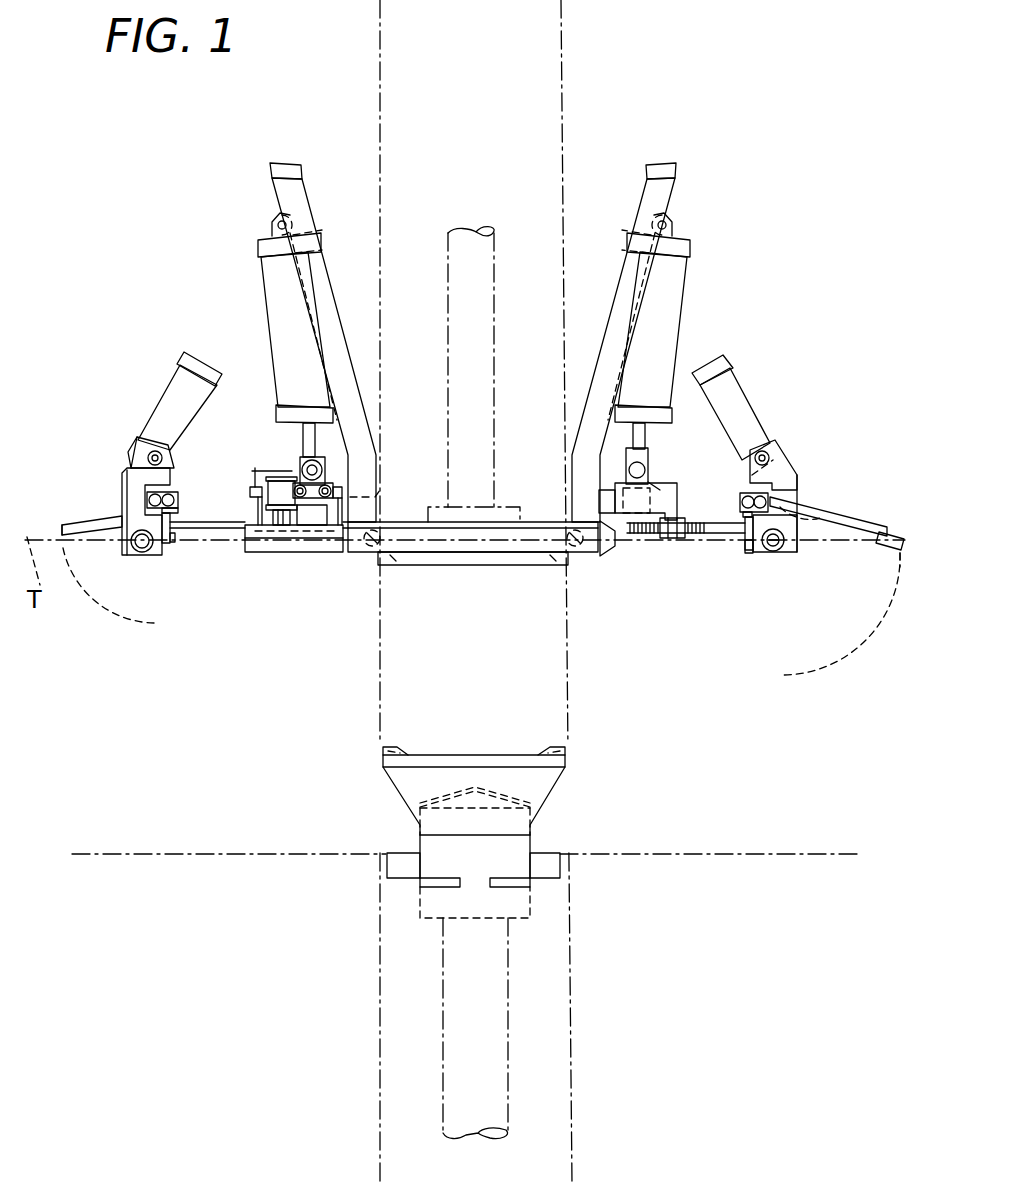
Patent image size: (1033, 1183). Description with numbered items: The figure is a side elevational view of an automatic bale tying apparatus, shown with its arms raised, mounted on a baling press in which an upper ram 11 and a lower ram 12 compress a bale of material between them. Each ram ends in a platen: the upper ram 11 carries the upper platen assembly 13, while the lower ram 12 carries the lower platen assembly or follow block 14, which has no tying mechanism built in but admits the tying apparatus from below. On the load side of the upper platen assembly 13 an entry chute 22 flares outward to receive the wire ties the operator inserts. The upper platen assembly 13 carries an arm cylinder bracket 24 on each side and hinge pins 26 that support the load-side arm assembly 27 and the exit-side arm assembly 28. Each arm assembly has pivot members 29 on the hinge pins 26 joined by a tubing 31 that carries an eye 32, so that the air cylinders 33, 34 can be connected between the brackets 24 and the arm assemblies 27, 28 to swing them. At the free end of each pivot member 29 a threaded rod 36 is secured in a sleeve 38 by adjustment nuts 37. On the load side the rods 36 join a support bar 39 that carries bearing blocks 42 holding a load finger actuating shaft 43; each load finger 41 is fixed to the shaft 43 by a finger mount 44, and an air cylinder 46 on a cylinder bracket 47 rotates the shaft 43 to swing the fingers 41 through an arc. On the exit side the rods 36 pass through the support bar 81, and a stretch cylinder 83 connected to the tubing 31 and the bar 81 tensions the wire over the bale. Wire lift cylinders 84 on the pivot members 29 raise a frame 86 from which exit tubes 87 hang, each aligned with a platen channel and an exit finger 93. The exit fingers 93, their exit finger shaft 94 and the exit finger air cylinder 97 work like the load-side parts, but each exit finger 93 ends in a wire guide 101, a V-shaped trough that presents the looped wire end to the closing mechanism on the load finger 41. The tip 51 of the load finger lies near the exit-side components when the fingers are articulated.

The upper ram 11 is at (497, 253).
The lower ram 12 is at (503, 1054).
The upper platen assembly 13 is at (453, 558).
The lower platen assembly or follow block 14 is at (472, 756).
The entry chute 22 is at (615, 555).
The arm cylinder bracket 24 is at (293, 193).
The hinge pin 26 is at (366, 553).
The arm assembly (load side) 27 is at (760, 532).
The arm assembly (exit side) 28 is at (180, 531).
The pivot member 29 is at (381, 489).
The tubing 31 is at (650, 500).
The eye 32 is at (326, 488).
The air cylinder 33 is at (676, 283).
The air cylinder 34 is at (276, 287).
The threaded rod 36 is at (738, 528).
The adjustment nut 37 is at (663, 538).
The sleeve 38 is at (672, 540).
The support bar 39 is at (748, 546).
The load finger 41 is at (870, 523).
The bearing block 42 is at (760, 546).
The load finger actuating shaft 43 is at (775, 545).
The finger mount 44 is at (813, 520).
The air cylinder 46 is at (745, 408).
The cylinder bracket 47 is at (787, 473).
The arm tip 51 is at (905, 535).
The support bar 81 is at (165, 546).
The stretch cylinder 83 is at (205, 525).
The wire lift cylinder 84 is at (271, 479).
The frame 86 is at (262, 490).
The exit tube 87 is at (263, 553).
The exit finger 93 is at (115, 518).
The exit finger shaft 94 is at (143, 546).
The exit finger air cylinder 97 is at (175, 400).
The wire guide 101 is at (65, 524).